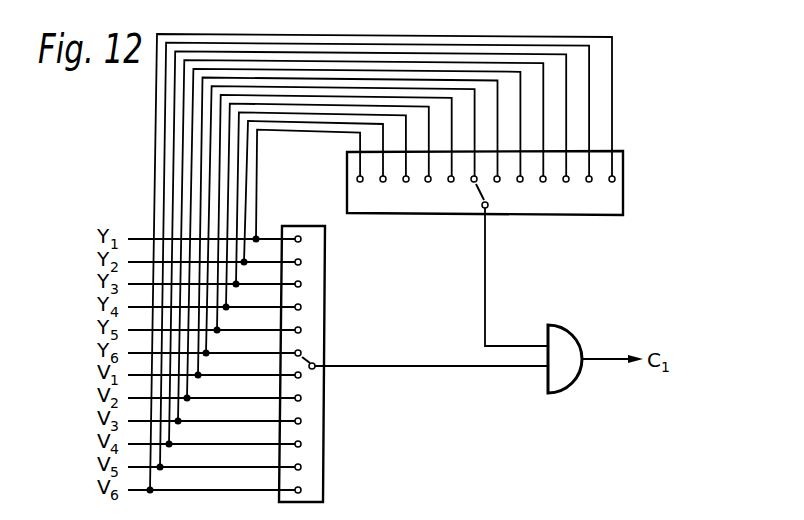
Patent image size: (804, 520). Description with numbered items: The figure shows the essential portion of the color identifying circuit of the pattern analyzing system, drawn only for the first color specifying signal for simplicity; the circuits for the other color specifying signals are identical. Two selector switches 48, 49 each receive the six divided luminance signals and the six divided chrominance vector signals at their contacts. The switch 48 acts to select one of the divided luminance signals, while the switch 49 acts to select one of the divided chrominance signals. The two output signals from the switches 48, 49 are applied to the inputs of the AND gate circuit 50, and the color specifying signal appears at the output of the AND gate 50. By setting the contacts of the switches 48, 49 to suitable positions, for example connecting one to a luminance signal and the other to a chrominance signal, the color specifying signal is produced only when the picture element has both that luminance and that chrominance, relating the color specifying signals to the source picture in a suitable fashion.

The switch 48 is at (324, 403).
The switch 49 is at (623, 187).
The AND gate circuit 50 is at (572, 331).